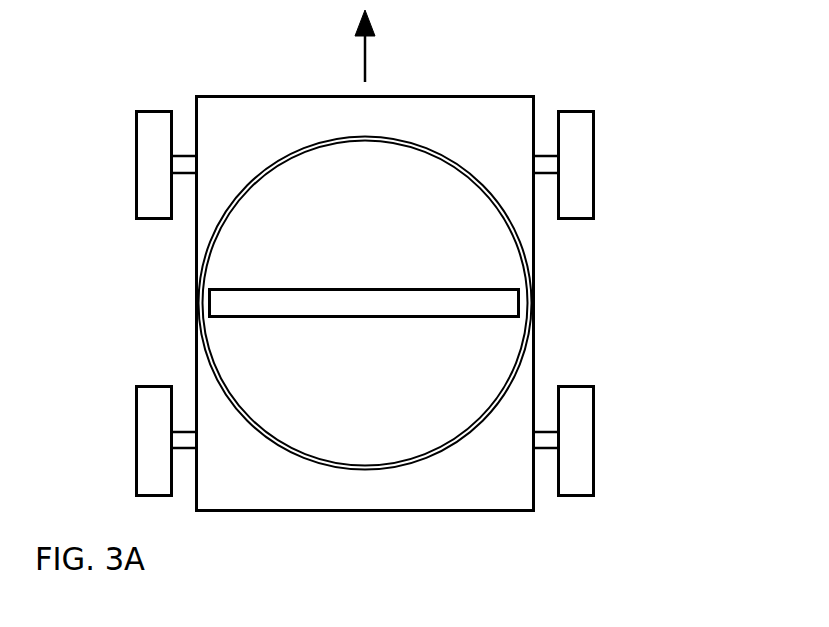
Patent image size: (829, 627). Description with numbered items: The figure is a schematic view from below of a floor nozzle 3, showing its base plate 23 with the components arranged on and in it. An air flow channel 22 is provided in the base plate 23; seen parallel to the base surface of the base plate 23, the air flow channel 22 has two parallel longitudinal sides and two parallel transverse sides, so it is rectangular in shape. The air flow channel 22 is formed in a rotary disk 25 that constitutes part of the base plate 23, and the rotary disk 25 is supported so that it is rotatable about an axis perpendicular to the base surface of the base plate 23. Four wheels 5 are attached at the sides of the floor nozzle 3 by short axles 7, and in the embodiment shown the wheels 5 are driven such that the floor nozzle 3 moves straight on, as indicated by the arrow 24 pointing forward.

The floor nozzle 3 is at (503, 75).
The wheels 5 is at (135, 152).
The axle 7 is at (186, 155).
The air flow channel 22 is at (483, 302).
The base plate 23 is at (520, 500).
The arrow 24 is at (366, 60).
The rotary disk 25 is at (483, 252).